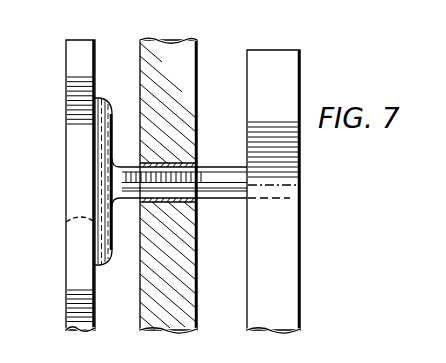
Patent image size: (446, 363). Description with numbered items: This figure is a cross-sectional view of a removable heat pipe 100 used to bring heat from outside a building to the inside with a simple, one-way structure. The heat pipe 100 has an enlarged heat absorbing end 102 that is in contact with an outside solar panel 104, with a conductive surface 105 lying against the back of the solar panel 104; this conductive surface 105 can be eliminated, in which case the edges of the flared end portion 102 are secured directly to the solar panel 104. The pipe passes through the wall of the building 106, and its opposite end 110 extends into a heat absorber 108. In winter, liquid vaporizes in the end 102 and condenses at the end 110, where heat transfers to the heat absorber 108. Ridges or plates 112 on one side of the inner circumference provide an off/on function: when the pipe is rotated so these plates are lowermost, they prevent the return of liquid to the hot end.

The heat pipe 100 is at (218, 200).
The enlarged heat absorbing end 102 is at (108, 110).
The outside solar panel 104 is at (80, 50).
The conductive surface 105 is at (66, 222).
The wall of the building 106 is at (170, 52).
The heat absorber 108 is at (278, 68).
The opposite end 110 is at (300, 186).
The ridges or plates 112 is at (224, 163).